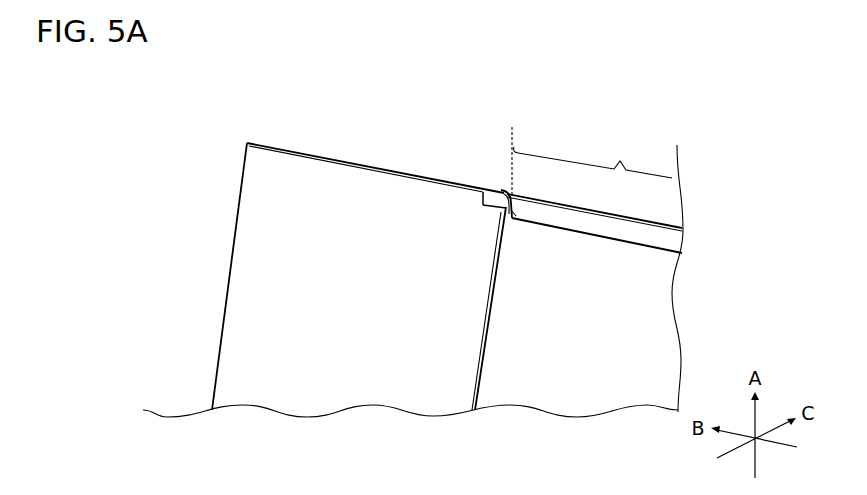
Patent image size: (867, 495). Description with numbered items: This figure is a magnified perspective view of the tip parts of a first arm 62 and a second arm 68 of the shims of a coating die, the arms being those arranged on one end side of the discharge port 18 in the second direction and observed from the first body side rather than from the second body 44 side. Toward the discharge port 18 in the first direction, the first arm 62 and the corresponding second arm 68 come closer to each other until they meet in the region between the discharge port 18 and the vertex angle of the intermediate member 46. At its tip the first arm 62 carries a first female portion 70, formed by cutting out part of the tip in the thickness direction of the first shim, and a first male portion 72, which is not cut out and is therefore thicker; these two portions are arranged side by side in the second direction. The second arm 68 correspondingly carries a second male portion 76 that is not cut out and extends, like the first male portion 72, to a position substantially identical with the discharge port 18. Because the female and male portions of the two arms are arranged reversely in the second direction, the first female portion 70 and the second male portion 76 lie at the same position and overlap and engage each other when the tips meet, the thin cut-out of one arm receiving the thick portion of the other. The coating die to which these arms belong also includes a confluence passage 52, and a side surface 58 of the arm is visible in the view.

The discharge port 18 is at (593, 157).
The second body 44 is at (252, 143).
The intermediate member 46 is at (660, 341).
The confluence passage 52 is at (670, 241).
The side surface of first panel 58 is at (480, 382).
The first arm 62 is at (213, 397).
The second arm 68 is at (515, 215).
The first female portion 70 is at (494, 212).
The first male portion 72 is at (474, 196).
The second male portion 76 is at (497, 193).